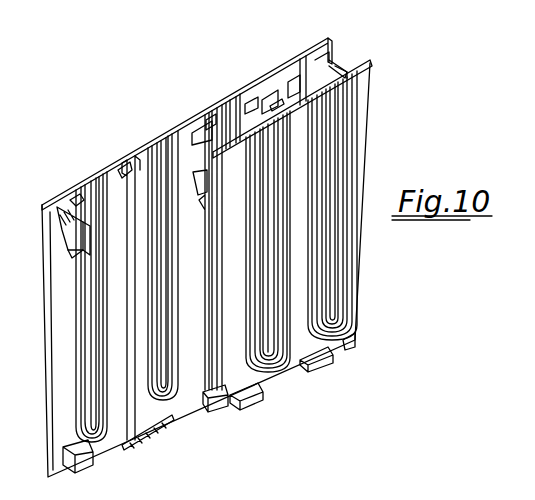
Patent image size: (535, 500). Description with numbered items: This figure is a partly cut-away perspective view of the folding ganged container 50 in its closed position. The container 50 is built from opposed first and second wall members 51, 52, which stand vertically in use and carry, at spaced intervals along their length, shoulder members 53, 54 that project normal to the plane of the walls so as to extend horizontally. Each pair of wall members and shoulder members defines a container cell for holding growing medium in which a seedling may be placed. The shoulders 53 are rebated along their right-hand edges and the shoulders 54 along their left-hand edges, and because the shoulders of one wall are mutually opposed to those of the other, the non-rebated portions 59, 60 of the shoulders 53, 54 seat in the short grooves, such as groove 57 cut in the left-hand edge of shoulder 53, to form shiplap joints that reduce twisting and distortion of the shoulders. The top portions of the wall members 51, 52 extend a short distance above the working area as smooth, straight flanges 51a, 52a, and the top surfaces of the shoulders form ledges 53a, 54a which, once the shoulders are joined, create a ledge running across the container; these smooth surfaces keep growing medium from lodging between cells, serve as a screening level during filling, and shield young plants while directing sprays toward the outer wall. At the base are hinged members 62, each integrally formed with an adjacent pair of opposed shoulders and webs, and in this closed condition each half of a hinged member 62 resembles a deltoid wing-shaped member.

The container 50 is at (412, 154).
The first wall member 51 is at (333, 58).
The flange 51a is at (296, 65).
The second wall member 52 is at (376, 110).
The flange 52a is at (362, 92).
The shoulder 53 is at (66, 200).
The ledge 53a is at (272, 104).
The shoulder 54 is at (212, 118).
The ledge 54a is at (368, 70).
The short groove 57 is at (65, 245).
The non-rebated portion 59 is at (75, 233).
The non-rebated portion 60 is at (208, 200).
The hinged member 62 is at (147, 420).